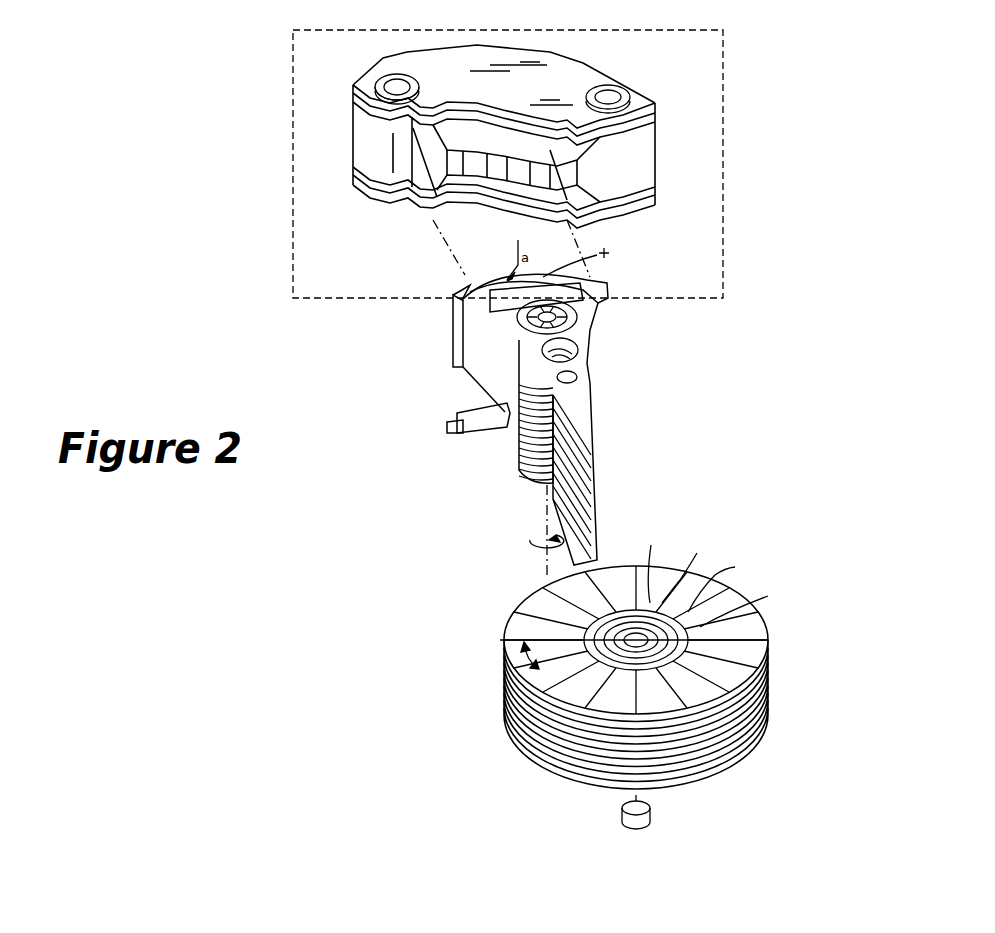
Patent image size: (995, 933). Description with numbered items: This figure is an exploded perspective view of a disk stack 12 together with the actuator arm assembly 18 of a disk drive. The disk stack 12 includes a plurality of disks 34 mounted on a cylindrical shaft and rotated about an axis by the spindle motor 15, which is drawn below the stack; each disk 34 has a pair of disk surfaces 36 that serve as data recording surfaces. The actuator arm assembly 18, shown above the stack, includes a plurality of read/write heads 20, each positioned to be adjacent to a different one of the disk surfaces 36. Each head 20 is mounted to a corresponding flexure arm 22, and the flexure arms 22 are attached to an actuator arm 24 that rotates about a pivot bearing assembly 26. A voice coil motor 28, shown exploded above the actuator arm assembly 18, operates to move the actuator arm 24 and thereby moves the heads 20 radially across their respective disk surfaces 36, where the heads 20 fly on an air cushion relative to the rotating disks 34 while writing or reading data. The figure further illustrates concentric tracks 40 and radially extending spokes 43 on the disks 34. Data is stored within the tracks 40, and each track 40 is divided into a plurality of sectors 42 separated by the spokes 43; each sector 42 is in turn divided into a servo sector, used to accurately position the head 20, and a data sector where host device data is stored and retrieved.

The disk stack 12 is at (521, 574).
The spindle motor 15 is at (620, 813).
The actuator arm assembly 18 is at (697, 366).
The read/write head 20 is at (595, 460).
The flexure arm 22 is at (587, 415).
The actuator arm 24 is at (588, 358).
The pivot bearing assembly 26 is at (573, 312).
The voice coil motor 28 is at (723, 153).
The disk 34 is at (660, 765).
The disk surface 36 is at (752, 650).
The track 40 is at (716, 575).
The sector 42 is at (522, 655).
The spoke 43 is at (540, 635).